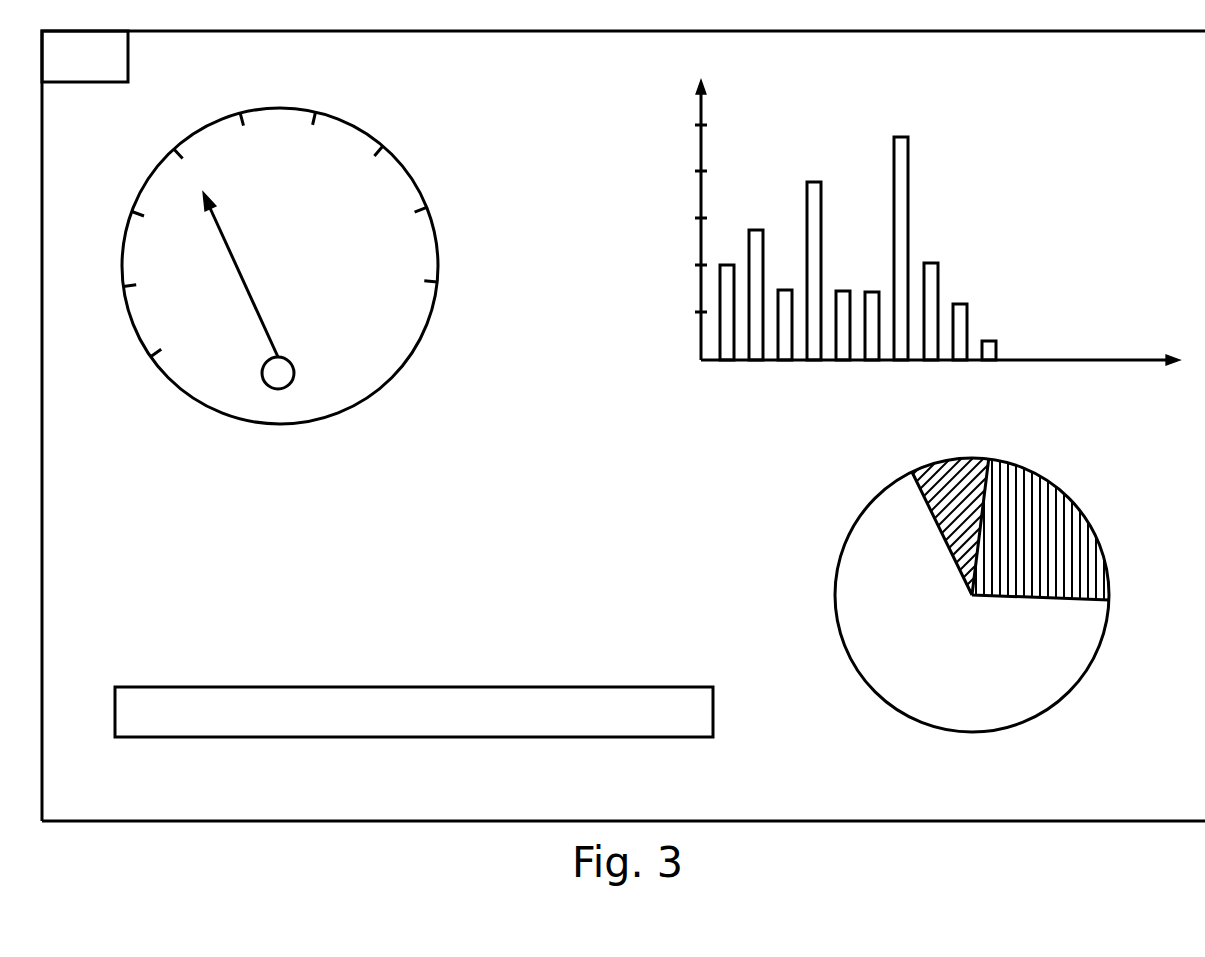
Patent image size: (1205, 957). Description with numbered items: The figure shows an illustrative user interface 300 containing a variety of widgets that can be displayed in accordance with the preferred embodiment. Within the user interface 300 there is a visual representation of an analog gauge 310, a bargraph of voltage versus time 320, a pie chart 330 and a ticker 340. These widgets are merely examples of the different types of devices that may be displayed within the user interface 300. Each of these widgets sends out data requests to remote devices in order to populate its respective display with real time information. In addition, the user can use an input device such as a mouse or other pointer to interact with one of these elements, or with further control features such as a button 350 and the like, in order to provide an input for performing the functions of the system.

The user interface 300 is at (602, 471).
The analog gauge 310 is at (348, 392).
The bargraph of voltage versus time 320 is at (1027, 345).
The pie chart 330 is at (863, 553).
The ticker 340 is at (378, 705).
The button 350 is at (80, 72).